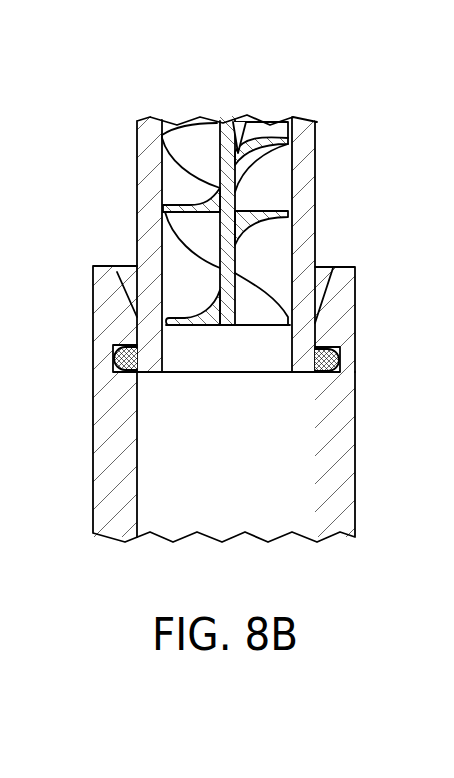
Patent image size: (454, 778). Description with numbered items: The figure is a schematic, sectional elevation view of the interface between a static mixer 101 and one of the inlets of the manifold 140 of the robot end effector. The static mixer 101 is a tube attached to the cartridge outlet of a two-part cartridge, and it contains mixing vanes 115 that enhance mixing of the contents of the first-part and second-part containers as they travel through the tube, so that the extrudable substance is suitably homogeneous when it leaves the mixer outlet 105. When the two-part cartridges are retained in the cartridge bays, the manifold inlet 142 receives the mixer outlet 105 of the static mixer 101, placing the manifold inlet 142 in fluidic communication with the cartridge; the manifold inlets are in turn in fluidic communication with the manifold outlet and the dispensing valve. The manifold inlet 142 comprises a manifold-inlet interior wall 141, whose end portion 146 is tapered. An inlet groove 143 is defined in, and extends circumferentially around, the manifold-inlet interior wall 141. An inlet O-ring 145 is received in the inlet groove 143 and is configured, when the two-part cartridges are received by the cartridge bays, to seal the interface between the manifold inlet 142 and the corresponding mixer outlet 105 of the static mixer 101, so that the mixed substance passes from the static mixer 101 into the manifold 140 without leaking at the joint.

The static mixer 101 is at (316, 173).
The mixer outlet 105 is at (248, 386).
The mixing vanes 115 is at (243, 146).
The manifold 140 is at (356, 448).
The manifold-inlet interior wall 141 is at (138, 450).
The manifold inlet 142 is at (372, 303).
The inlet groove 143 is at (112, 371).
The inlet O-ring 145 is at (333, 360).
The end portion 146 is at (331, 268).